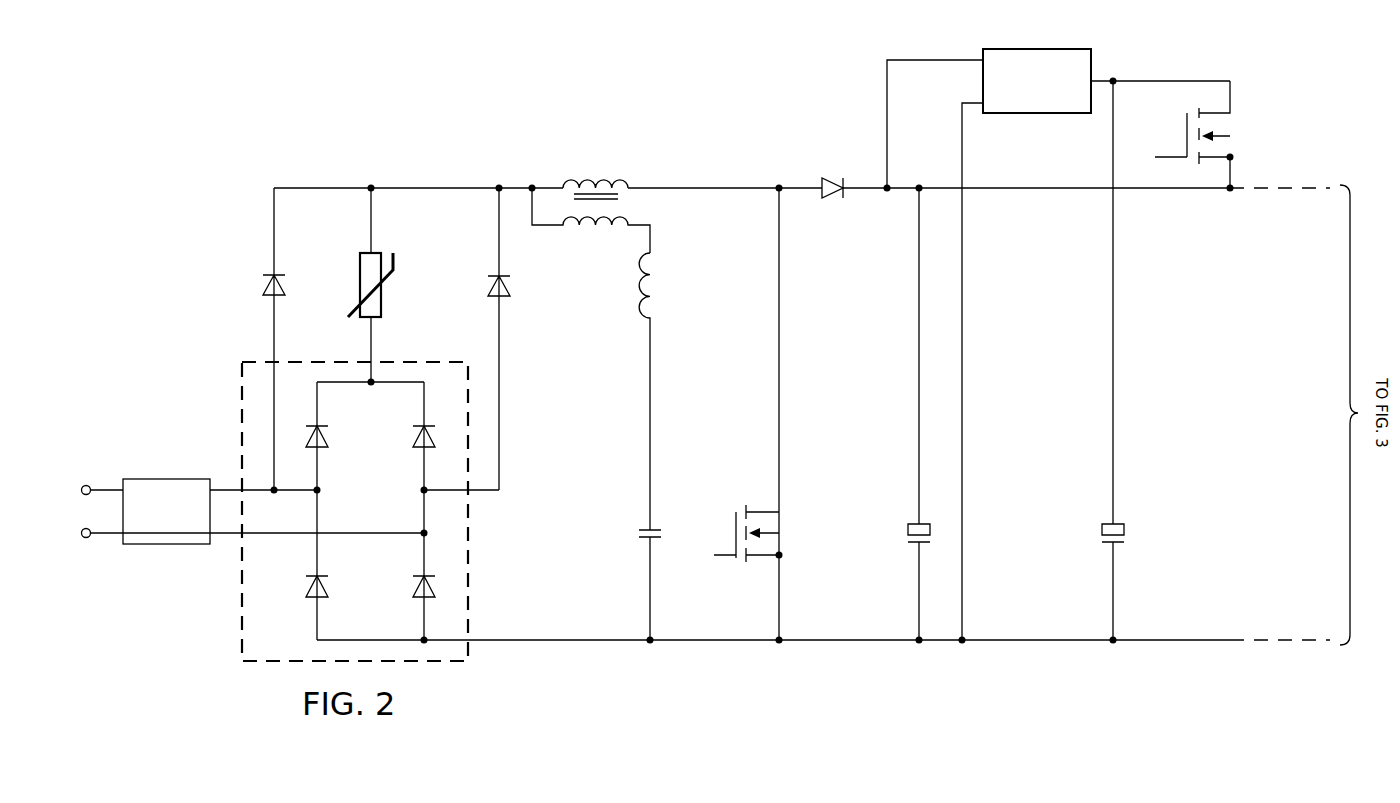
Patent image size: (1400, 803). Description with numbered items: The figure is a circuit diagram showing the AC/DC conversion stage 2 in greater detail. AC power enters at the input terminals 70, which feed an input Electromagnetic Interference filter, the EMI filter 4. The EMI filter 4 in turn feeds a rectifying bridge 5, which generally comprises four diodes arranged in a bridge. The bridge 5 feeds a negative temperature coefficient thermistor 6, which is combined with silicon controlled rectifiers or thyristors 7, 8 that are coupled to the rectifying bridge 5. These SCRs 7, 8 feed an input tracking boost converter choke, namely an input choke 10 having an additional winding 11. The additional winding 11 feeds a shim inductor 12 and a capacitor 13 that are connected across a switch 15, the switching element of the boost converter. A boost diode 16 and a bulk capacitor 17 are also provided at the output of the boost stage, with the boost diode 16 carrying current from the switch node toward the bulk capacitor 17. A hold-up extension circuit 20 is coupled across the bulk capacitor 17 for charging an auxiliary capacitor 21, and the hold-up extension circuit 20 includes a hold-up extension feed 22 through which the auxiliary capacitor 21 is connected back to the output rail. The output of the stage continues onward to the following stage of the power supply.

The AC/DC conversion stage 2 is at (207, 142).
The EMI filter 4 is at (166, 544).
The rectifying bridge 5 is at (242, 625).
The negative temperature coefficient thermistor 6 is at (356, 286).
The silicon controlled rectifier 7 is at (264, 286).
The silicon controlled rectifier 8 is at (490, 286).
The input choke 10 is at (587, 172).
The additional winding 11 is at (633, 219).
The shim inductor 12 is at (632, 275).
The capacitor 13 is at (634, 533).
The switch 15 is at (732, 522).
The boost diode 16 is at (831, 178).
The bulk capacitor 17 is at (905, 540).
The hold-up extension circuit 20 is at (1096, 72).
The auxiliary capacitor 21 is at (1127, 540).
The hold-up extension feed 22 is at (1186, 125).
The input terminals 70 is at (84, 485).